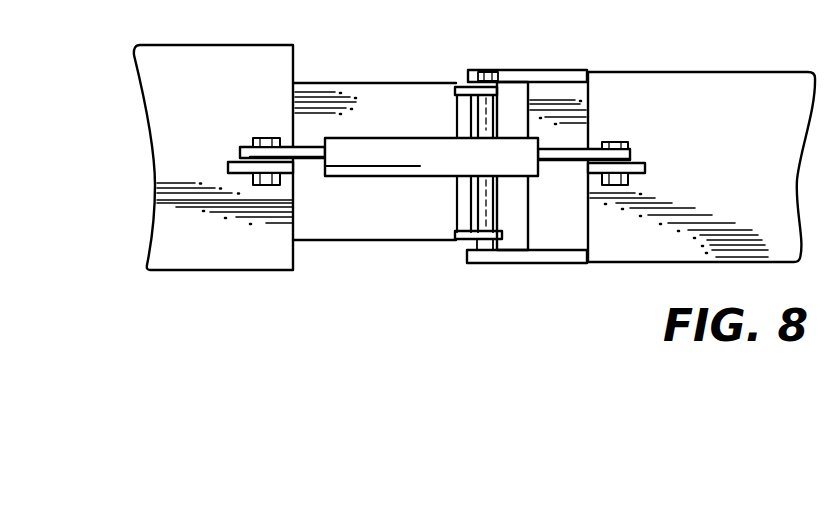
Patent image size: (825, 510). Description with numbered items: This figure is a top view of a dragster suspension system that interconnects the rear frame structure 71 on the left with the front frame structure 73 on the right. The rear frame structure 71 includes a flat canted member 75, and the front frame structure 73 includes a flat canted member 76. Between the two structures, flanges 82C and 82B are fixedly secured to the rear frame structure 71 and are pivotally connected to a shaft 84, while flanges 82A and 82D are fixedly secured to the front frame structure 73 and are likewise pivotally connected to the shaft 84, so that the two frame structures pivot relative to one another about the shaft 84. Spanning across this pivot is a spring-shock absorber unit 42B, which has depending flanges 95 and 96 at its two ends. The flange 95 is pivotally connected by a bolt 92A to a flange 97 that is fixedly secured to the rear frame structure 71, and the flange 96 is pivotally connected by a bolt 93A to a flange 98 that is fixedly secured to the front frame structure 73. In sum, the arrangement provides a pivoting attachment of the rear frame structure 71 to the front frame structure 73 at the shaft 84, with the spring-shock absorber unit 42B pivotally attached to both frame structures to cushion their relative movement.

The rear frame structure 71 is at (132, 128).
The front frame structure 73 is at (704, 63).
The flat canted member 75 is at (322, 203).
The flat canted member 76 is at (576, 240).
The spring-shock absorber unit 42B is at (420, 170).
The flange 82A is at (513, 263).
The flange 82B is at (465, 234).
The flange 82C is at (456, 88).
The flange 82D is at (487, 70).
The shaft 84 is at (495, 208).
The bolt 92A is at (262, 138).
The bolt 93A is at (617, 142).
The depending flange 95 is at (325, 142).
The depending flange 96 is at (541, 144).
The flange 97 is at (232, 166).
The flange 98 is at (645, 168).